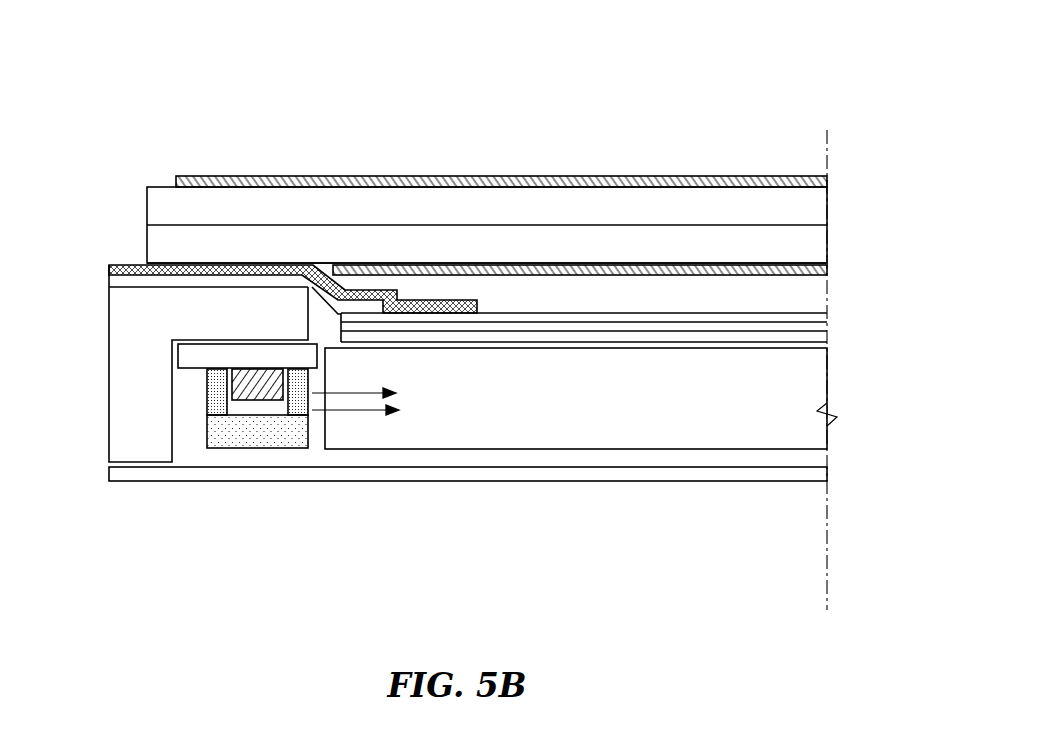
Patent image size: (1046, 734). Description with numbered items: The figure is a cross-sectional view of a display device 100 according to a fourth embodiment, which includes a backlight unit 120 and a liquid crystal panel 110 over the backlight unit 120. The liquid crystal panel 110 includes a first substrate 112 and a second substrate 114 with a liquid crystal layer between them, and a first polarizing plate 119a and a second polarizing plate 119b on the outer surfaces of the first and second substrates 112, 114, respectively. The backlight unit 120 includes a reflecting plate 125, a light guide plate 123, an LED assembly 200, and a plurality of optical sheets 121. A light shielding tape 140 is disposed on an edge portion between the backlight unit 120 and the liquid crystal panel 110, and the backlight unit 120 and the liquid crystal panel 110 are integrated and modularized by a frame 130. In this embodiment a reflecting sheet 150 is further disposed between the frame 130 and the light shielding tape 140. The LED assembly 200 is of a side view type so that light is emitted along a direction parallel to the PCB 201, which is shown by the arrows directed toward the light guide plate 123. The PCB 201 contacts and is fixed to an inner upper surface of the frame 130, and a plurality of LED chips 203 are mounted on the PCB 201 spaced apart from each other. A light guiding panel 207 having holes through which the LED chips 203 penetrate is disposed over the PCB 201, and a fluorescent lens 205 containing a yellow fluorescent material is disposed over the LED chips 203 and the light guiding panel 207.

The display device 100 is at (462, 318).
The liquid crystal panel 110 is at (487, 156).
The first substrate 112 is at (533, 245).
The second substrate 114 is at (477, 203).
The first polarizing plate 119a is at (678, 270).
The second polarizing plate 119b is at (623, 177).
The backlight unit 120 is at (463, 438).
The optical sheets 121 is at (818, 317).
The light guide plate 123 is at (663, 433).
The reflecting plate 125 is at (583, 472).
The frame 130 is at (135, 407).
The light shielding tape 140 is at (105, 270).
The reflecting sheet 150 is at (133, 283).
The LED assembly 200 is at (278, 472).
The PCB 201 is at (198, 353).
The LED chips 203 is at (243, 399).
The fluorescent lens 205 is at (277, 428).
The light guiding panel 207 is at (271, 479).